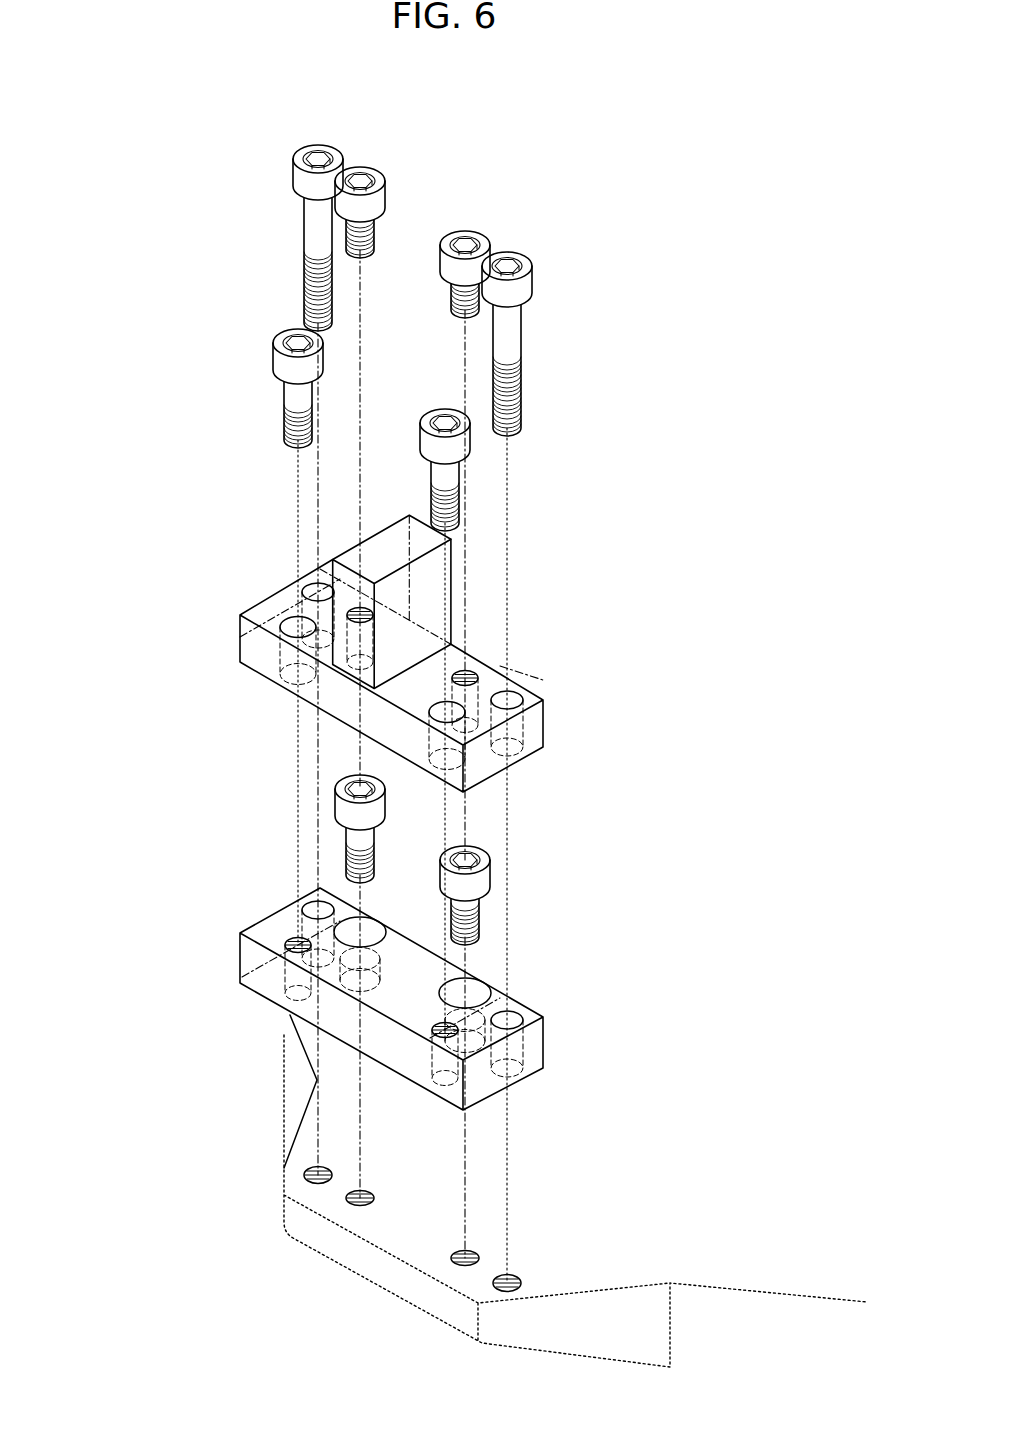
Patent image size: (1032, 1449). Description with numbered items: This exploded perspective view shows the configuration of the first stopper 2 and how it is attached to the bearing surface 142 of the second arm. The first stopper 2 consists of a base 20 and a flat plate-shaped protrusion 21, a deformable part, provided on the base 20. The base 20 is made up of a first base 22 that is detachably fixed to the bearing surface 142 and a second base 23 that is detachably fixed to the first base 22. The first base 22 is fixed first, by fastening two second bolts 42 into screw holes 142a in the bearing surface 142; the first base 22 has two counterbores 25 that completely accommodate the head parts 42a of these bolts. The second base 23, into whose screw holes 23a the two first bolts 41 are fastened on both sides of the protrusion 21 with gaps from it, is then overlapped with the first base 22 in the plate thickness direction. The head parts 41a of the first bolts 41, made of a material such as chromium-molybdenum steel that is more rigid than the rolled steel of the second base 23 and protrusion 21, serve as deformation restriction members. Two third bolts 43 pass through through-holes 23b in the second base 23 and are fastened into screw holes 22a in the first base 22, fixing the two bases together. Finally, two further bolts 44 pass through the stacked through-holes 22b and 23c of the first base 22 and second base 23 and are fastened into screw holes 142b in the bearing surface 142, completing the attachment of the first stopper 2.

The first stopper 2 is at (180, 464).
The base 20 is at (141, 620).
The protrusion 21 is at (398, 553).
The first base 22 is at (368, 988).
The screw holes 22a is at (290, 938).
The through-holes 22b is at (309, 905).
The second base 23 is at (380, 652).
The screw holes 23a is at (362, 606).
The through-holes 23b is at (290, 620).
The through-holes 23c is at (310, 586).
The counterbores 25 is at (370, 930).
The first bolts 41 is at (468, 198).
The head parts 41a is at (380, 181).
The second bolts 42 is at (414, 836).
The head parts 42a is at (346, 798).
The third bolts 43 is at (262, 320).
The bolts 44 is at (282, 163).
The bearing surface 142 is at (533, 1191).
The screw holes 142a is at (350, 1196).
The screw holes 142b is at (308, 1170).